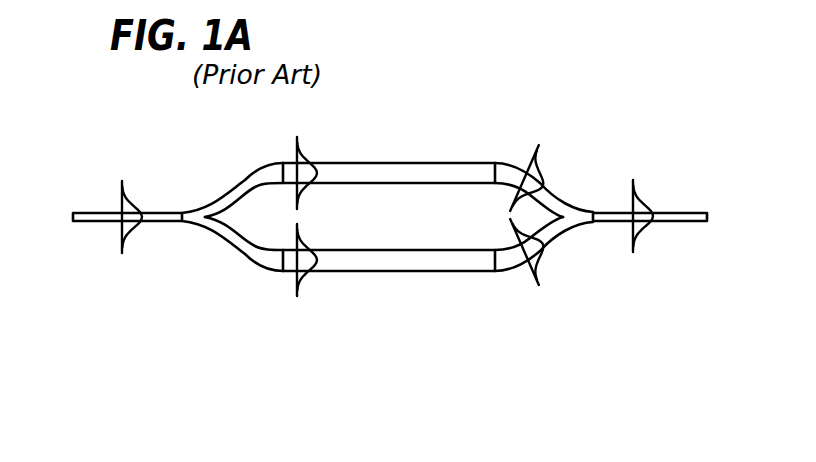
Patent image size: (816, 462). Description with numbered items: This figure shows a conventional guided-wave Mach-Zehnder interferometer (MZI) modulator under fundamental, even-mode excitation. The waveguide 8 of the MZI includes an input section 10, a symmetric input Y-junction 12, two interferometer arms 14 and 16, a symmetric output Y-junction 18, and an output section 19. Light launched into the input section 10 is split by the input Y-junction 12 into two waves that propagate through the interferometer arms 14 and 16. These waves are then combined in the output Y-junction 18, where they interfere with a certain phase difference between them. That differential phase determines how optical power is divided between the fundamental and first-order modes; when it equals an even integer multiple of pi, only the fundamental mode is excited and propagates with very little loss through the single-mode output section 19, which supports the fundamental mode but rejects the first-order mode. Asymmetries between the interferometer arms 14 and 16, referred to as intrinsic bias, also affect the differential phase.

The waveguide 8 is at (150, 122).
The input section 10 is at (83, 211).
The symmetric input Y-junction 12 is at (208, 205).
The interferometer arm 14 is at (370, 162).
The interferometer arm 16 is at (383, 271).
The symmetric output Y-junction 18 is at (565, 200).
The output section 19 is at (675, 208).